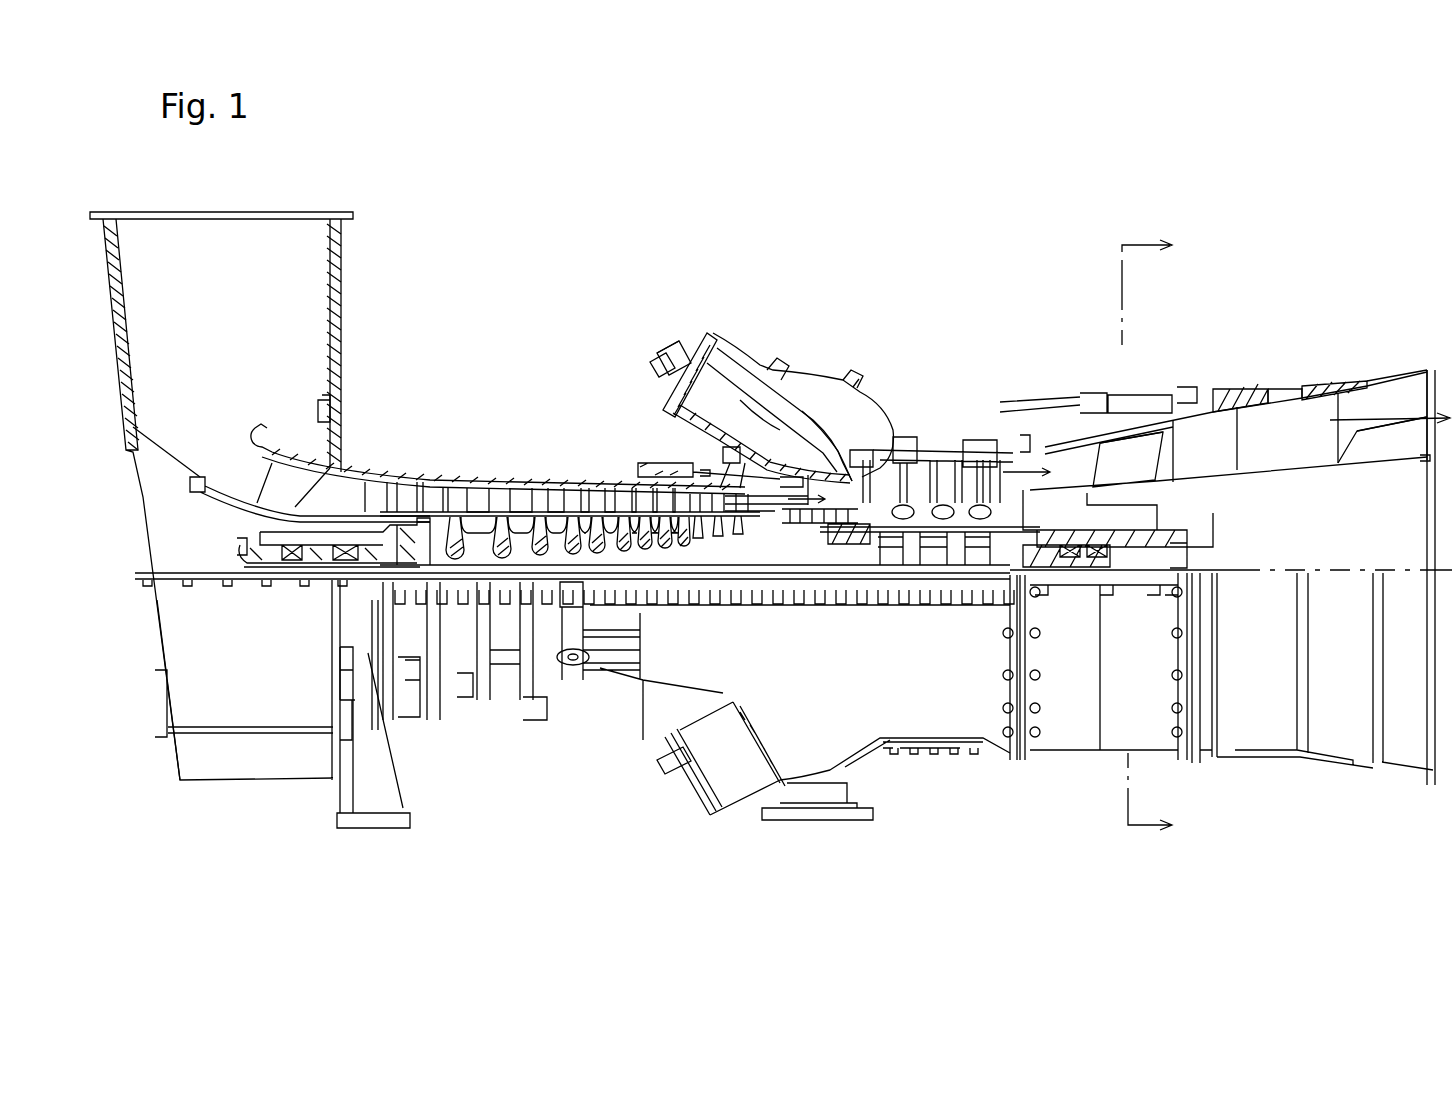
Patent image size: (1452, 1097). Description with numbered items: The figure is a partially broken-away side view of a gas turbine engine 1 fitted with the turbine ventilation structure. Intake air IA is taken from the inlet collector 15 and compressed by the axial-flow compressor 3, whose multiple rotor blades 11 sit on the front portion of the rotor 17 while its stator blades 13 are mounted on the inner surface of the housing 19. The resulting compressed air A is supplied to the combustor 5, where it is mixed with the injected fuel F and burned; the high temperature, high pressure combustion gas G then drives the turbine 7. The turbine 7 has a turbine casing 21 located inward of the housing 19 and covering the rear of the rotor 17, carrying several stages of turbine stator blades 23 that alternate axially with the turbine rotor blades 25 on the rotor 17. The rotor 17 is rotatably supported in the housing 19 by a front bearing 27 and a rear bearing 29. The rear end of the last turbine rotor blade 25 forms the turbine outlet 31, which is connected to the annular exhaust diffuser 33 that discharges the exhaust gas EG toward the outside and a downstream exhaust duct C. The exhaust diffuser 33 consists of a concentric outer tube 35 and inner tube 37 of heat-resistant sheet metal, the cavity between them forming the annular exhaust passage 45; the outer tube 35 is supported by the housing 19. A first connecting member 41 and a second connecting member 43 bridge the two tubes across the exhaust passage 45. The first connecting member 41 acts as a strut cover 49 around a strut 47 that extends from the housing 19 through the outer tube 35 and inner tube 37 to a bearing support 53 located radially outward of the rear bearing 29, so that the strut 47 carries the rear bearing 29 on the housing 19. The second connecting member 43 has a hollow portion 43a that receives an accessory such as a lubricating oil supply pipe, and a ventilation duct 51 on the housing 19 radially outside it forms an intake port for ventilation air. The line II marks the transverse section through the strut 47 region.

The gas turbine engine 1 is at (1270, 260).
The compressor 3 is at (539, 740).
The combustor 5 is at (673, 410).
The turbine 7 is at (930, 440).
The rotor blades 11 is at (455, 500).
The stator blades 13 is at (430, 498).
The inlet collector 15 is at (343, 273).
The rotor 17 is at (1053, 580).
The housing 19 is at (920, 410).
The turbine casing 21 is at (860, 440).
The turbine stator blades 23 is at (937, 510).
The turbine rotor blades 25 is at (967, 497).
The bearing 27 is at (293, 557).
The rear bearing 29 is at (1130, 573).
The turbine outlet 31 is at (1005, 505).
The exhaust diffuser 33 is at (1395, 306).
The outer tube 35 is at (1318, 387).
The inner tube 37 is at (1323, 463).
The first connecting member 41 is at (1092, 446).
The second connecting member 43 is at (1335, 455).
The hollow portion 43a is at (1302, 460).
The exhaust passage 45 is at (1219, 460).
The strut 47 is at (1085, 458).
The strut cover 49 is at (1131, 437).
The ventilation duct 51 is at (1270, 387).
The bearing support 53 is at (1185, 510).
The intake air IA is at (213, 258).
The fuel F is at (643, 356).
The compressed air A is at (781, 405).
The combustion gas G is at (835, 450).
The exhaust gas EG is at (1010, 505).
The exhaust duct C is at (1333, 565).
The line II- II is at (1159, 536).